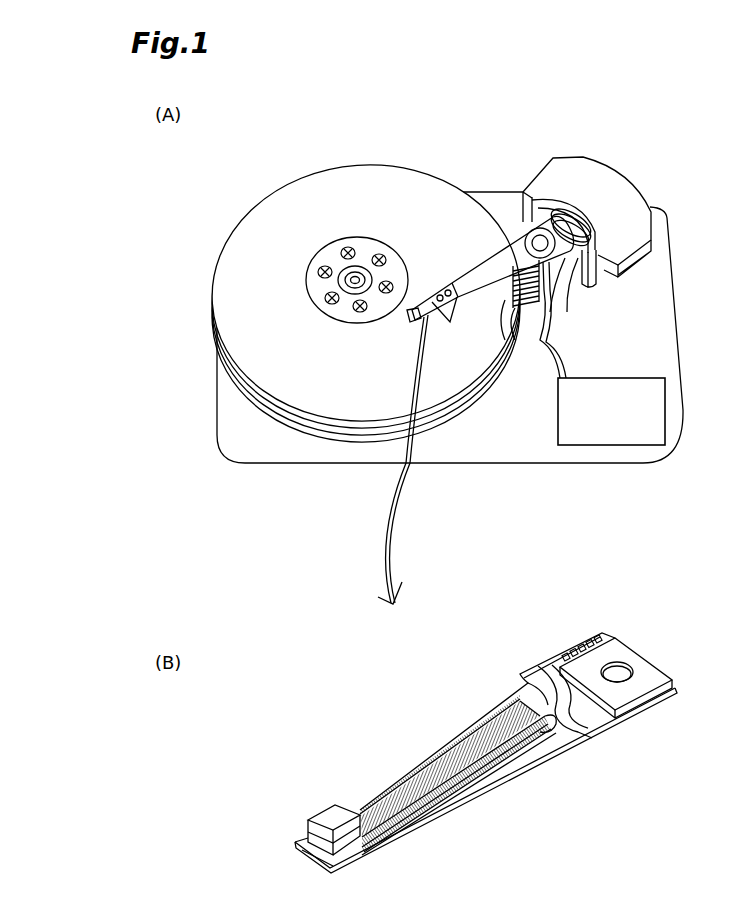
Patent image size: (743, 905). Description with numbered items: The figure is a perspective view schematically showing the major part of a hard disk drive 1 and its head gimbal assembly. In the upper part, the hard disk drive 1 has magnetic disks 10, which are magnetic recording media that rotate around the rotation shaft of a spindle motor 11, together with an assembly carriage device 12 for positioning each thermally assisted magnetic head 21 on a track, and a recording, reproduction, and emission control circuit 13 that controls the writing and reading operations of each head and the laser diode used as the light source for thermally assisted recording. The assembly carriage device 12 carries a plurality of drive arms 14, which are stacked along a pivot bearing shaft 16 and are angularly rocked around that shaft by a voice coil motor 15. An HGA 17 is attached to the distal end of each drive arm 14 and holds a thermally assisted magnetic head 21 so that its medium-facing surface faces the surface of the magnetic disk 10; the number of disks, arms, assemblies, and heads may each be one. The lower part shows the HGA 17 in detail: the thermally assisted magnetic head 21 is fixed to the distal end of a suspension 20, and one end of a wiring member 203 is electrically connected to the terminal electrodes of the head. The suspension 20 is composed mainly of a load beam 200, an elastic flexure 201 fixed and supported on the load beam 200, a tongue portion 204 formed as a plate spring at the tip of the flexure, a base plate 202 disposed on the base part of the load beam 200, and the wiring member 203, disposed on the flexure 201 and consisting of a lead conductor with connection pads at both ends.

The hard disk drive 1 is at (203, 252).
The magnetic disk 10 is at (273, 188).
The spindle motor 11 is at (350, 278).
The assembly carriage device 12 is at (573, 168).
The recording, reproduction, and emission control circuit 13 is at (622, 445).
The drive arm 14 is at (480, 273).
The voice coil motor 15 is at (600, 290).
The pivot bearing shaft 16 is at (538, 242).
The HGA 17 is at (451, 320).
The suspension 20 is at (489, 708).
The thermally assisted magnetic head 21 is at (411, 322).
The load beam 200 is at (570, 733).
The flexure 201 is at (537, 748).
The base plate 202 is at (645, 683).
The wiring member 203 is at (445, 795).
The tongue portion 204 is at (350, 853).